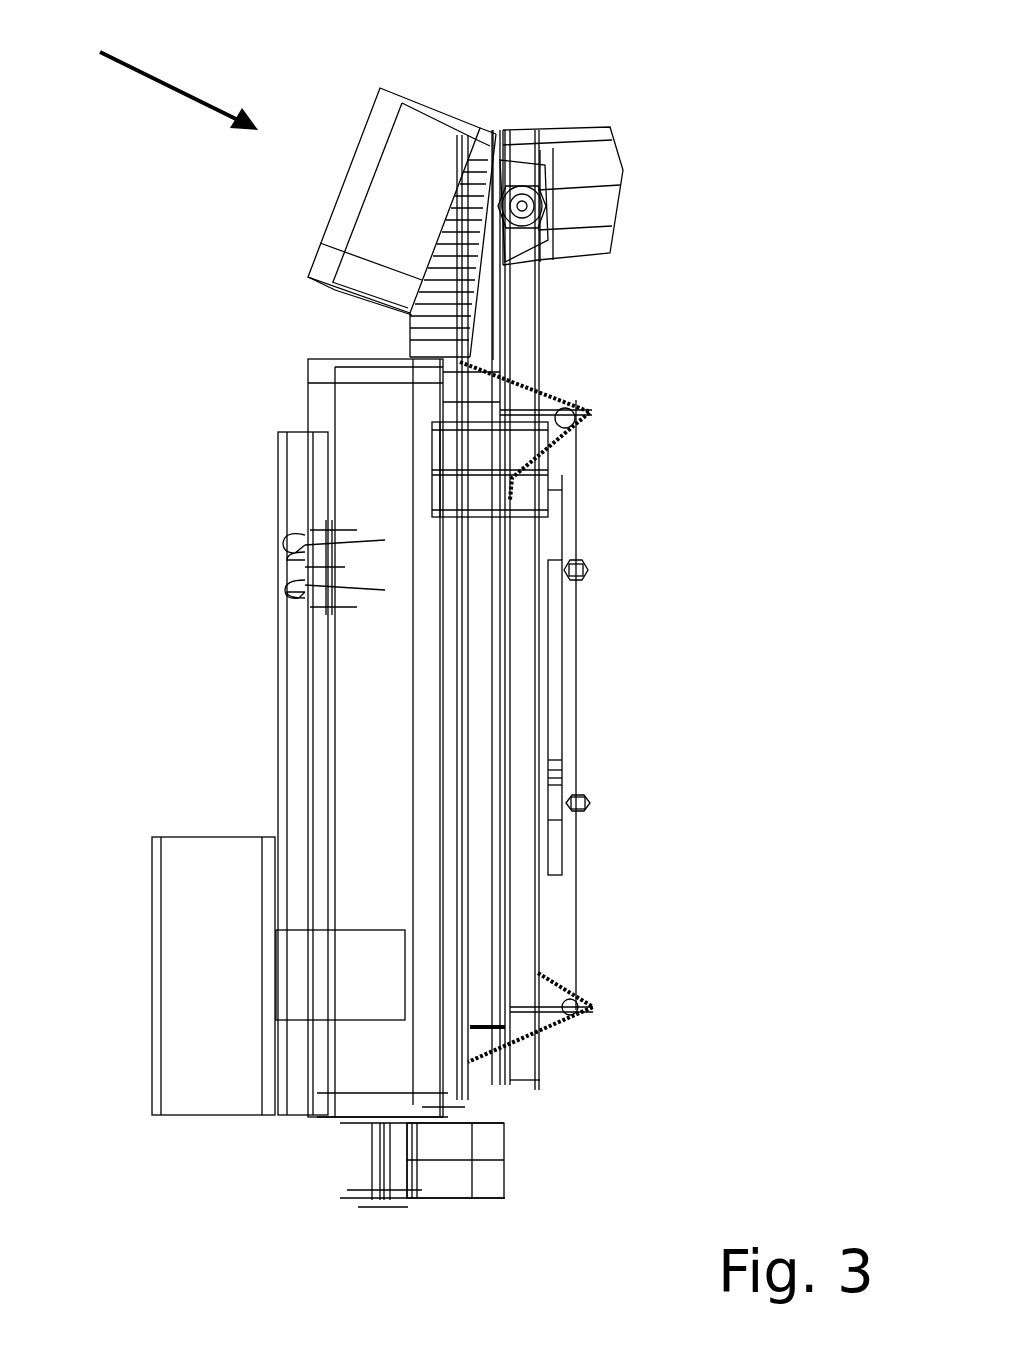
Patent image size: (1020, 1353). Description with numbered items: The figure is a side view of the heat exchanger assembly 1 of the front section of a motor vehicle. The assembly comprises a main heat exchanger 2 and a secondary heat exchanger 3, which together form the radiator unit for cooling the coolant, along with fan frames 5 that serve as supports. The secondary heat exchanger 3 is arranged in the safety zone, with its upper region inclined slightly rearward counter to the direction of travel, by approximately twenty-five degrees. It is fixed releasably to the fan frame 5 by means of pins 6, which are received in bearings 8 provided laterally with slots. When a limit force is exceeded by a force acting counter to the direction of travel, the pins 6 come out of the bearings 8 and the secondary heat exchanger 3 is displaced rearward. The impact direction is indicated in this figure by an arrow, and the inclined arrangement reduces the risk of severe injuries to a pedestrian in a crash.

The heat exchanger assembly 1 is at (128, 392).
The main heat exchanger 2 is at (372, 647).
The secondary heat exchanger 3 is at (394, 200).
The fan frame 5 is at (476, 282).
The pin 6 is at (527, 230).
The bearing 8 is at (525, 176).